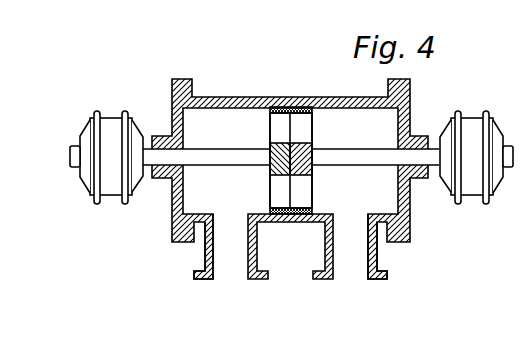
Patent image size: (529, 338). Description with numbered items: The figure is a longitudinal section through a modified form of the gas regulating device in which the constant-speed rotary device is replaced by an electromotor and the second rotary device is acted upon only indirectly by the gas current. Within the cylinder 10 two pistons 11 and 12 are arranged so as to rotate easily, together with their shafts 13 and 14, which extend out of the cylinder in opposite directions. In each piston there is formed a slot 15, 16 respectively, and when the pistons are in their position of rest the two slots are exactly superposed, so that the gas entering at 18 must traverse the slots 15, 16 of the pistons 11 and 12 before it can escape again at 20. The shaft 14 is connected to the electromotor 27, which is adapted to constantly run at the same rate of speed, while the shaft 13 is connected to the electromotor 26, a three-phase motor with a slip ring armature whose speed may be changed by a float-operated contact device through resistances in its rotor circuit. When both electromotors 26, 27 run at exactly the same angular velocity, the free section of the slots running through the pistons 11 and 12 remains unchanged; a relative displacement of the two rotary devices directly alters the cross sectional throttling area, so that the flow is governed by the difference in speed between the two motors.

The cylinder 10 is at (230, 98).
The piston 11 is at (286, 135).
The piston 12 is at (306, 104).
The shaft 13 is at (192, 157).
The shaft 14 is at (368, 160).
The slot 15 is at (275, 138).
The slot 16 is at (308, 133).
The gas inlet 18 is at (232, 267).
The gas outlet 20 is at (358, 272).
The electromotor 26 is at (107, 122).
The electromotor 27 is at (472, 130).